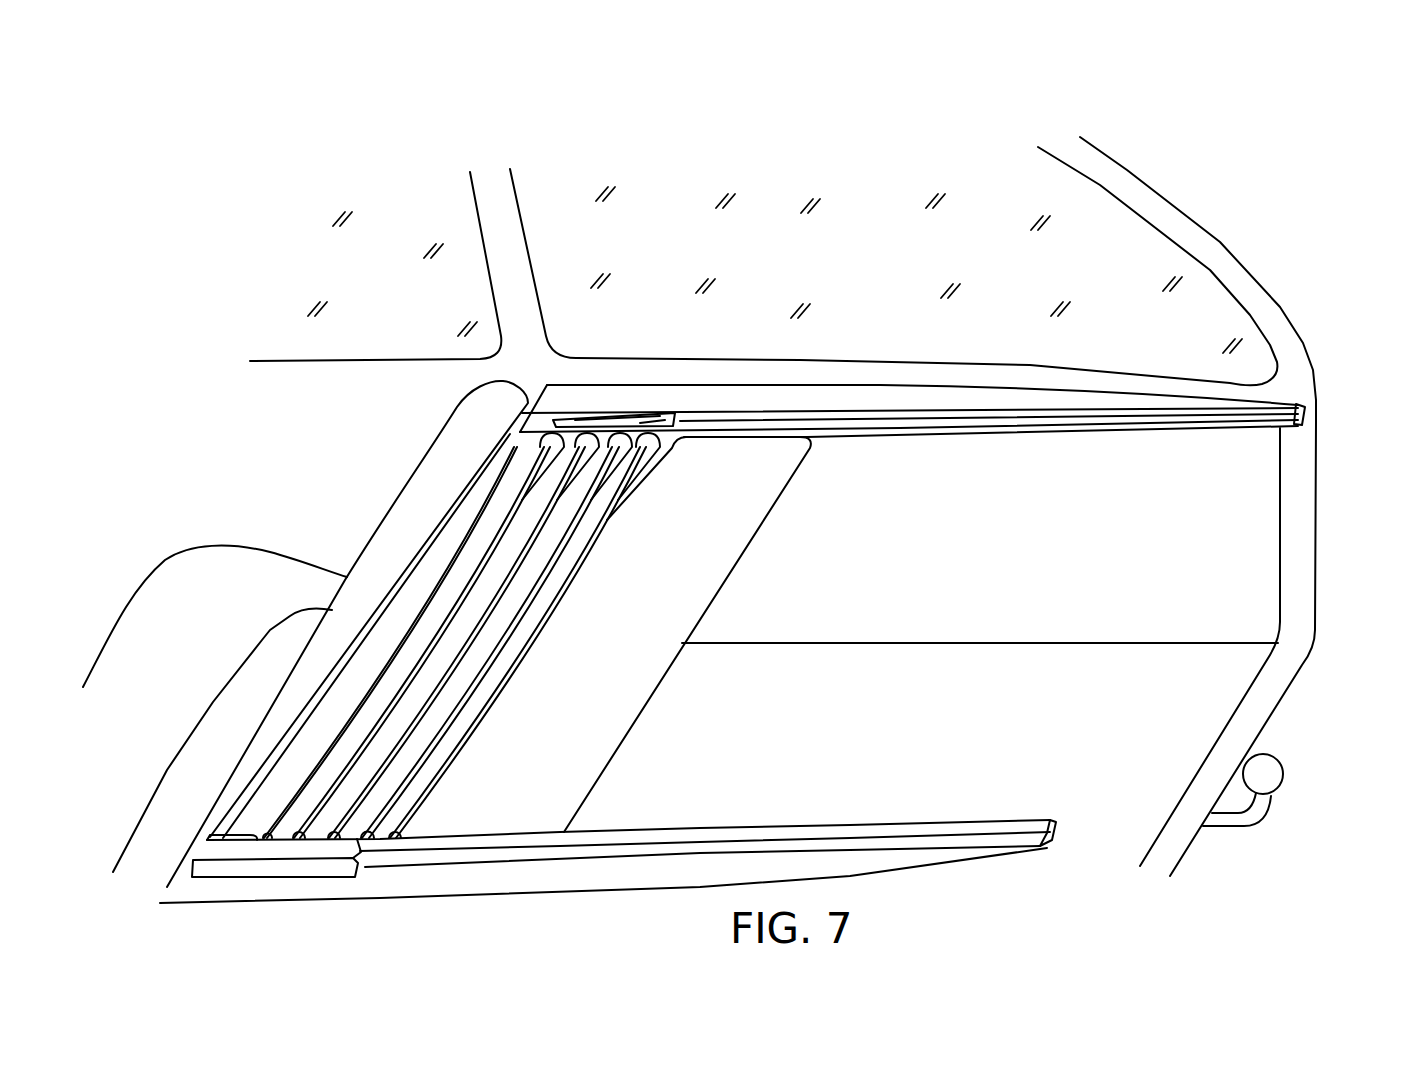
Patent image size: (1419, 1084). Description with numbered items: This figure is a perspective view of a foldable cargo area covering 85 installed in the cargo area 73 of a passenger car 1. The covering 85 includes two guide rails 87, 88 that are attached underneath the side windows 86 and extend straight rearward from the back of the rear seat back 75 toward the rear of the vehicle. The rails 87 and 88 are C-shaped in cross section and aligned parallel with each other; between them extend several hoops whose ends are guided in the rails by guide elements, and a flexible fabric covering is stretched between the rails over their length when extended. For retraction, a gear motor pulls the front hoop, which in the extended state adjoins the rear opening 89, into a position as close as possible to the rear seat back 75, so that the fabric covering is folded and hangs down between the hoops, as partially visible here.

The passenger car 1 is at (1258, 204).
The cargo area 73 is at (1227, 576).
The rear seat back 75 is at (410, 510).
The cargo area covering 85 is at (883, 543).
The side windows 86 is at (878, 277).
The guide rail 87 is at (1070, 430).
The guide rail 88 is at (891, 833).
The rear opening 89 is at (1286, 648).